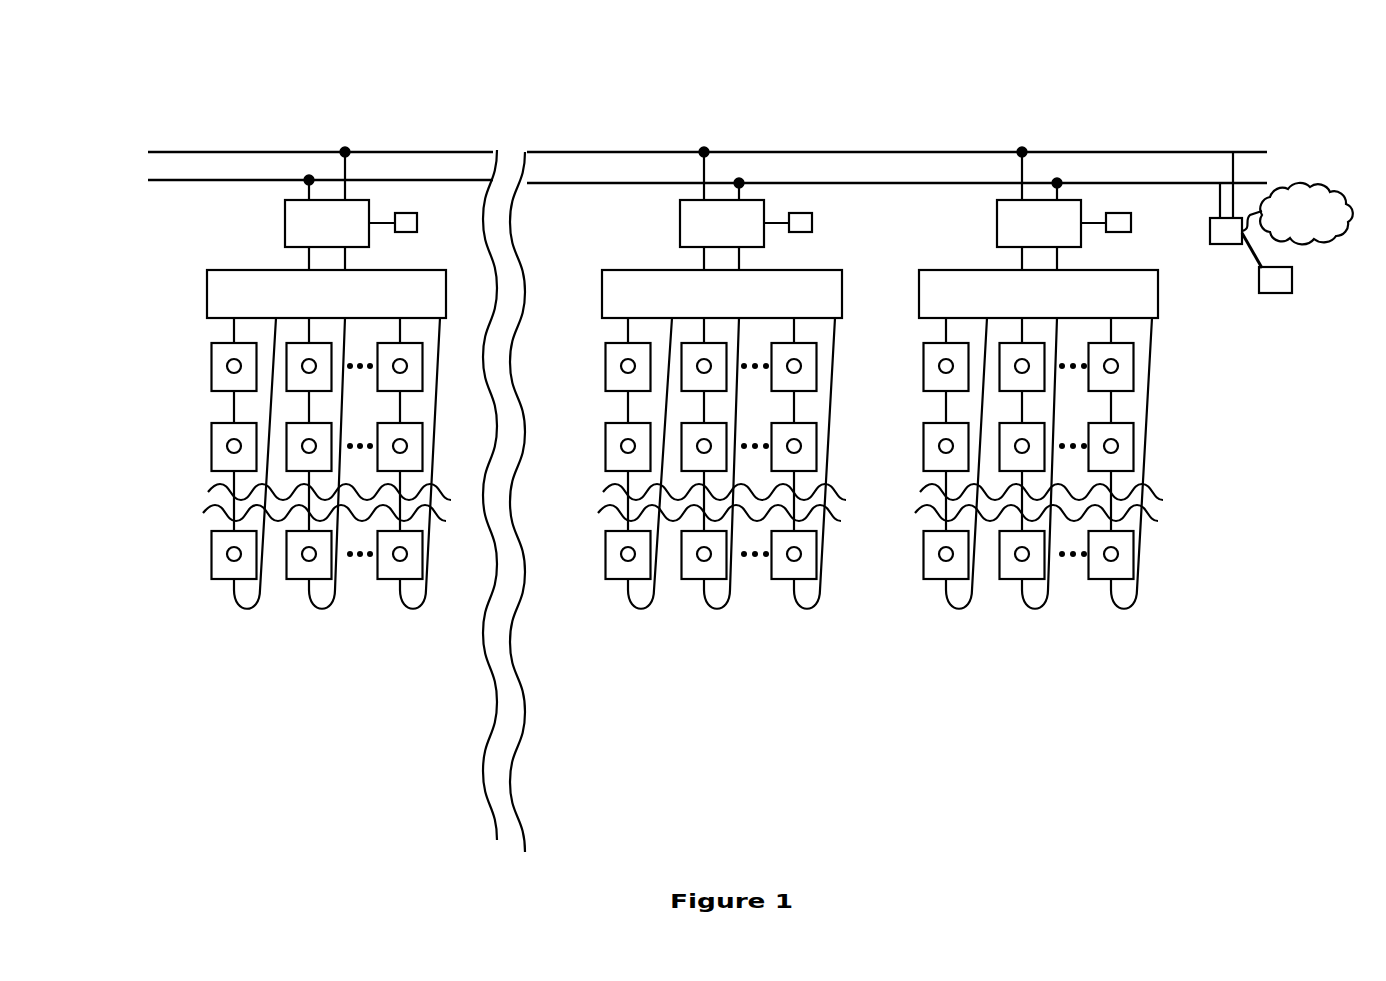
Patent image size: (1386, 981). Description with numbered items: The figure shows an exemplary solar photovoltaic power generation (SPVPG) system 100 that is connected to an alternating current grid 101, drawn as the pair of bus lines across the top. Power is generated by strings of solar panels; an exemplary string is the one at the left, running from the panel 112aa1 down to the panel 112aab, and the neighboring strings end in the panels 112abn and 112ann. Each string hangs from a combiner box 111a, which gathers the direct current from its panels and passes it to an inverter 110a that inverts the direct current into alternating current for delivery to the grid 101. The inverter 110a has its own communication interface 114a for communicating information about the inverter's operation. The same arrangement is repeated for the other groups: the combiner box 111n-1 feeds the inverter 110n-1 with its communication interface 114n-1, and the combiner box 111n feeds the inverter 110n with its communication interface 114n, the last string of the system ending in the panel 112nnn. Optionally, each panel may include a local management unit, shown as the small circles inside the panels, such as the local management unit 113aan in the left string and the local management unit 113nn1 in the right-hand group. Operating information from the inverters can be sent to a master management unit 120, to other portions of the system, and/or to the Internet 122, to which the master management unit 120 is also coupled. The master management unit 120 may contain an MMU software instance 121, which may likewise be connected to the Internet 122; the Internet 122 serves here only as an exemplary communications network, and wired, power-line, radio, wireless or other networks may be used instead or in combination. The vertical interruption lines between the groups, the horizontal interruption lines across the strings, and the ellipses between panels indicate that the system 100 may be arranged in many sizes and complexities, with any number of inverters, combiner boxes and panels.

The SPVPG system 100 is at (238, 78).
The alternating current (AC) grid 101 is at (190, 152).
The inverter 110a is at (285, 223).
The combiner box 111a is at (207, 293).
The communication interface 114a is at (425, 199).
The solar panel 112aa1 is at (213, 350).
The local management unit (LMU) 113aan is at (227, 549).
The solar panel 112aab is at (228, 579).
The solar panel 112abn is at (306, 579).
The solar panel 112ann is at (402, 579).
The inverter 110n-1 is at (680, 223).
The combiner box 111n-1 is at (602, 293).
The communication interface 114n-1 is at (813, 220).
The inverter 110n is at (997, 223).
The combiner box 111n is at (963, 270).
The communication interface 114n is at (1131, 220).
The local management unit (LMU) 113nn1 is at (1134, 364).
The solar panel 112nnn is at (1111, 580).
The master management unit (MMU) 120 is at (1222, 244).
The MMU software instance 121 is at (1278, 293).
The Internet 122 is at (1279, 188).